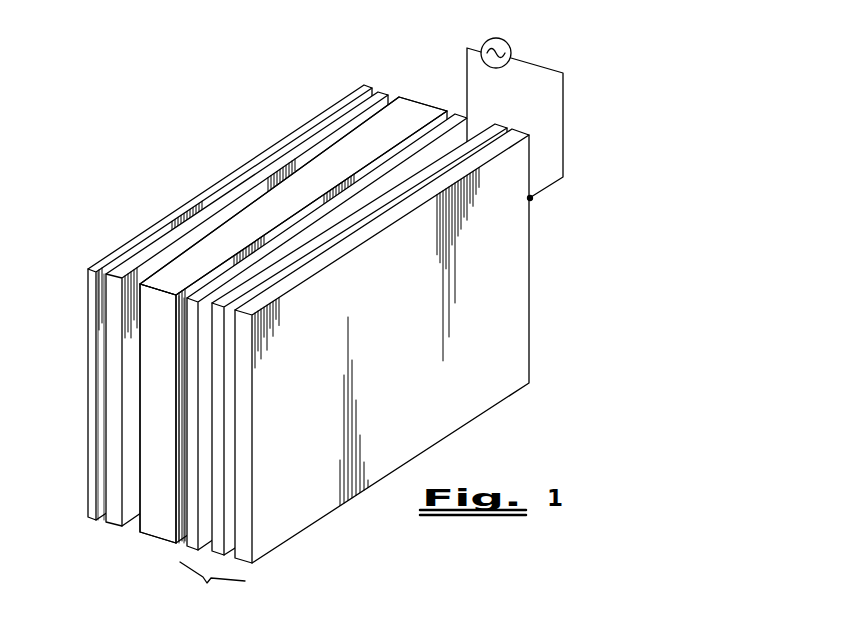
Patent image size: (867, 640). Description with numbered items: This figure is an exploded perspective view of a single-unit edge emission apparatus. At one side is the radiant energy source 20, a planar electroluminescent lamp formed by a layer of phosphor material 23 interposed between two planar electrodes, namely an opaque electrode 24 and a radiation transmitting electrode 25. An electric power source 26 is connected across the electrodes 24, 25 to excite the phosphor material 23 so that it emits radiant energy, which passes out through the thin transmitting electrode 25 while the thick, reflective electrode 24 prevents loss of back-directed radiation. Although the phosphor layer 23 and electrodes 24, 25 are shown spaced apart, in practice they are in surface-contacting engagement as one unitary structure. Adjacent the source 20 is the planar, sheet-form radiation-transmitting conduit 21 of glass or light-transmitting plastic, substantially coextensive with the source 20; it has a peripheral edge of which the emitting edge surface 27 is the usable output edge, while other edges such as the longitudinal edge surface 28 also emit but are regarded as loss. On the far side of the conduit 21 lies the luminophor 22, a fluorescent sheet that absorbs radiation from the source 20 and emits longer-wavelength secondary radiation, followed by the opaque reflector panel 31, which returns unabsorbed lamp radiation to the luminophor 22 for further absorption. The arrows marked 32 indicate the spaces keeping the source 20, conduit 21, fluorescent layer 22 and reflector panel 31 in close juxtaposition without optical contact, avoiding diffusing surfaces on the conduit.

The radiant energy source 20 is at (212, 585).
The radiation-transmitting conduit 21 is at (281, 316).
The luminophor 22 is at (117, 522).
The layer of phosphor material 23 is at (483, 127).
The opaque electrode 24 is at (518, 313).
The radiation transmitting electrode 25 is at (437, 134).
The electric power source 26 is at (506, 39).
The emitting edge surface 27 is at (157, 413).
The longitudinal edge surface 28 is at (412, 115).
The opaque reflector panel 31 is at (93, 323).
The spaces 32 is at (100, 521).